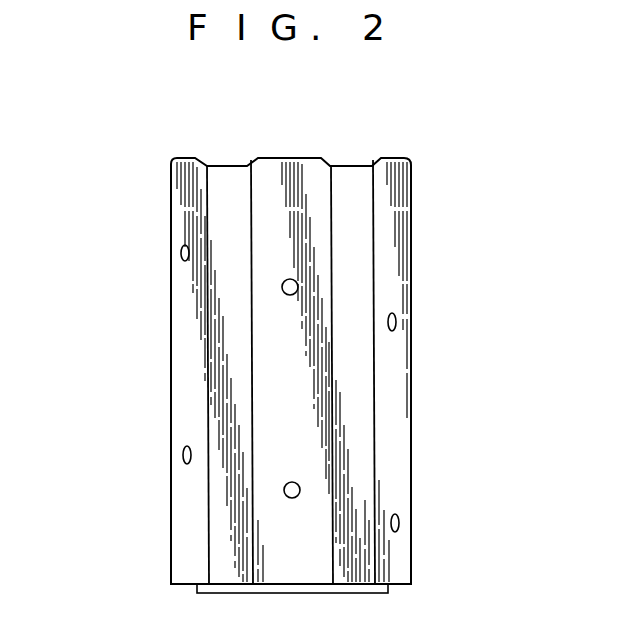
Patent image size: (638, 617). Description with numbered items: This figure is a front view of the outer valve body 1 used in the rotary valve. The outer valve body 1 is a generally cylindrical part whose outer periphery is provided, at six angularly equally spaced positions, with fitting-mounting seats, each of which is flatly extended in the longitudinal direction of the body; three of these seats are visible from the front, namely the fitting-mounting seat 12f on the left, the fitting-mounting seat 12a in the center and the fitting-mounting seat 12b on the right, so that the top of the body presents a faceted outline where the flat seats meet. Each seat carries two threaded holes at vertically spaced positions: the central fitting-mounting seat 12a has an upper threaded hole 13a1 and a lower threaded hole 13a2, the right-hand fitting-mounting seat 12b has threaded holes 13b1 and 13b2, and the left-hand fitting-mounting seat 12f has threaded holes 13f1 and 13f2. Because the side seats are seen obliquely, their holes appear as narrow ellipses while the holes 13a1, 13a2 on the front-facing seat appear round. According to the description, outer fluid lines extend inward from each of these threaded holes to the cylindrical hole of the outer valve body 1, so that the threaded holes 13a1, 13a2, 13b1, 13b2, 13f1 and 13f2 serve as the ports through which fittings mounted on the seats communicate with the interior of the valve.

The outer valve body 1 is at (378, 158).
The fitting-mounting seat 12a is at (298, 158).
The fitting-mounting seat 12b is at (406, 198).
The fitting-mounting seat 12f is at (180, 194).
The threaded hole 13a1 is at (298, 287).
The threaded hole 13a2 is at (300, 490).
The threaded hole 13b1 is at (397, 322).
The threaded hole 13b2 is at (400, 523).
The threaded hole 13f1 is at (181, 253).
The threaded hole 13f2 is at (178, 455).